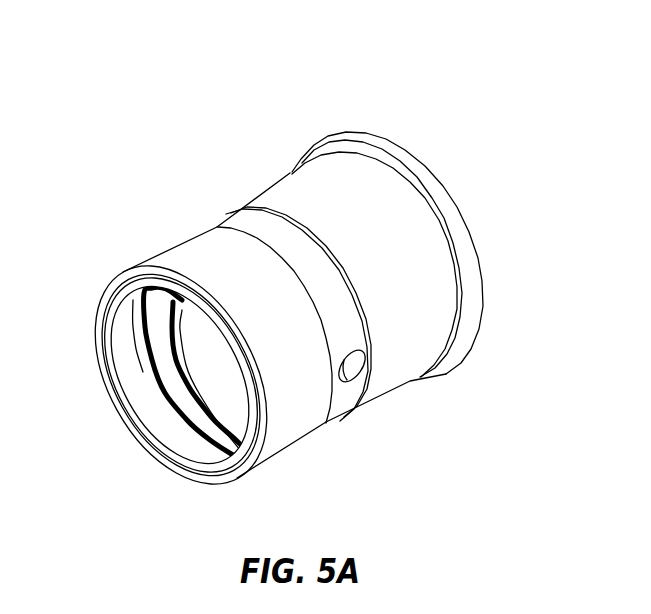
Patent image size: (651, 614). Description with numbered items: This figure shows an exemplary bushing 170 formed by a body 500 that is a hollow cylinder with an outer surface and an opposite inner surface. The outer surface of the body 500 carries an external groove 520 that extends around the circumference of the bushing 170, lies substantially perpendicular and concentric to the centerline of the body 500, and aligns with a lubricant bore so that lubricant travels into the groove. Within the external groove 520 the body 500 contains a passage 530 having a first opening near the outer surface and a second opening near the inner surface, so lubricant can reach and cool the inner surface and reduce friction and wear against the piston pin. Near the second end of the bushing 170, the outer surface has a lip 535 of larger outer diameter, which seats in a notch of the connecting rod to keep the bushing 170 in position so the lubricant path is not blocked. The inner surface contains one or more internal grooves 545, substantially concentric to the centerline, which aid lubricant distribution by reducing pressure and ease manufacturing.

The bushing 170 is at (118, 105).
The body 500 is at (405, 258).
The external groove 520 is at (213, 214).
The passage 530 is at (357, 370).
The lip 535 is at (400, 162).
The internal groove 545 is at (148, 372).